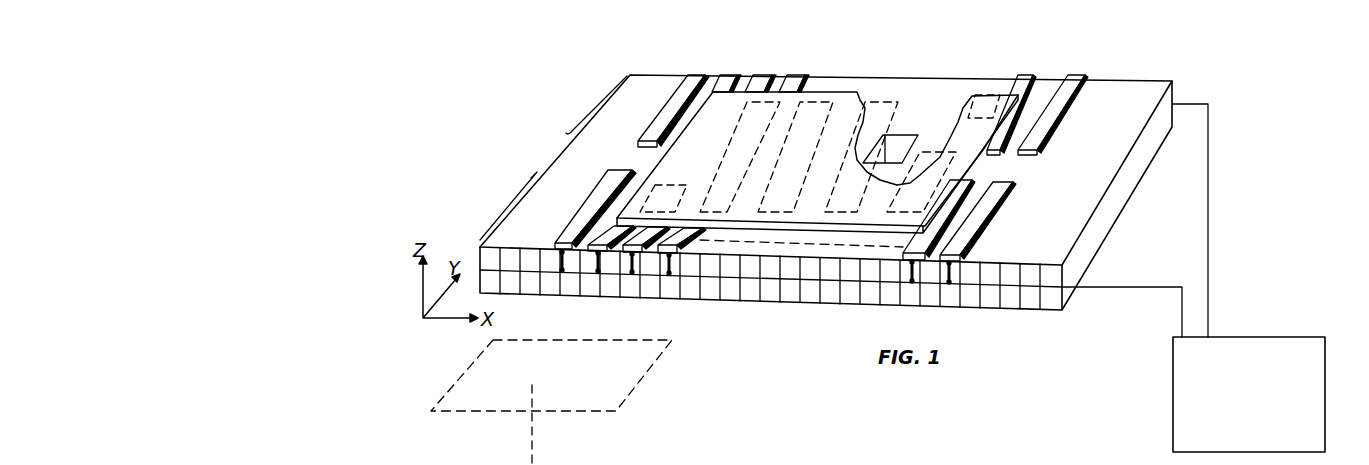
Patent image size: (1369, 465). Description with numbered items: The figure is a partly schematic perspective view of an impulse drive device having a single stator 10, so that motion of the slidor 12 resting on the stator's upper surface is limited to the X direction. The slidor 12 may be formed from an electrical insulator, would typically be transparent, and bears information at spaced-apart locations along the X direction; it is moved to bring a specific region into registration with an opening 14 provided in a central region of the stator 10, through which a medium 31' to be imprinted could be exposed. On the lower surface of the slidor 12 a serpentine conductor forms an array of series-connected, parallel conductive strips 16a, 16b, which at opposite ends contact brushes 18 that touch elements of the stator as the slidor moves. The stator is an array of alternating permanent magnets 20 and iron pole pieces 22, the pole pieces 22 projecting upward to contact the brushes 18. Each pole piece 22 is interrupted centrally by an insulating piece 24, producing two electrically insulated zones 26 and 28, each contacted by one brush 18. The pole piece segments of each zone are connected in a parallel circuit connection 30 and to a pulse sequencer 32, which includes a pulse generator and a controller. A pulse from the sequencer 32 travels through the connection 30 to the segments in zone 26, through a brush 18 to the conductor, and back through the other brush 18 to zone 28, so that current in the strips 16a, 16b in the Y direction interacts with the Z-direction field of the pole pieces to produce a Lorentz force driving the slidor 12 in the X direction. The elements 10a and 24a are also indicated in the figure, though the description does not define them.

The stator 10 is at (1120, 78).
The slidor 12 is at (975, 167).
The opening 14 is at (898, 145).
The conductive strip 16a is at (732, 77).
The conductive strip 16b is at (819, 73).
The brushes 18 is at (655, 185).
The permanent magnets 20 is at (612, 292).
The iron pole pieces 22 is at (566, 290).
The insulating piece 24 is at (638, 152).
The zone 26 is at (512, 201).
The zone 28 is at (600, 98).
The parallel circuit connection 30 is at (717, 292).
The medium 31' is at (569, 375).
The pulse sequencer 32 is at (1278, 337).
The substrate axis 10a is at (497, 464).
The spacer bar axis 24a is at (447, 464).